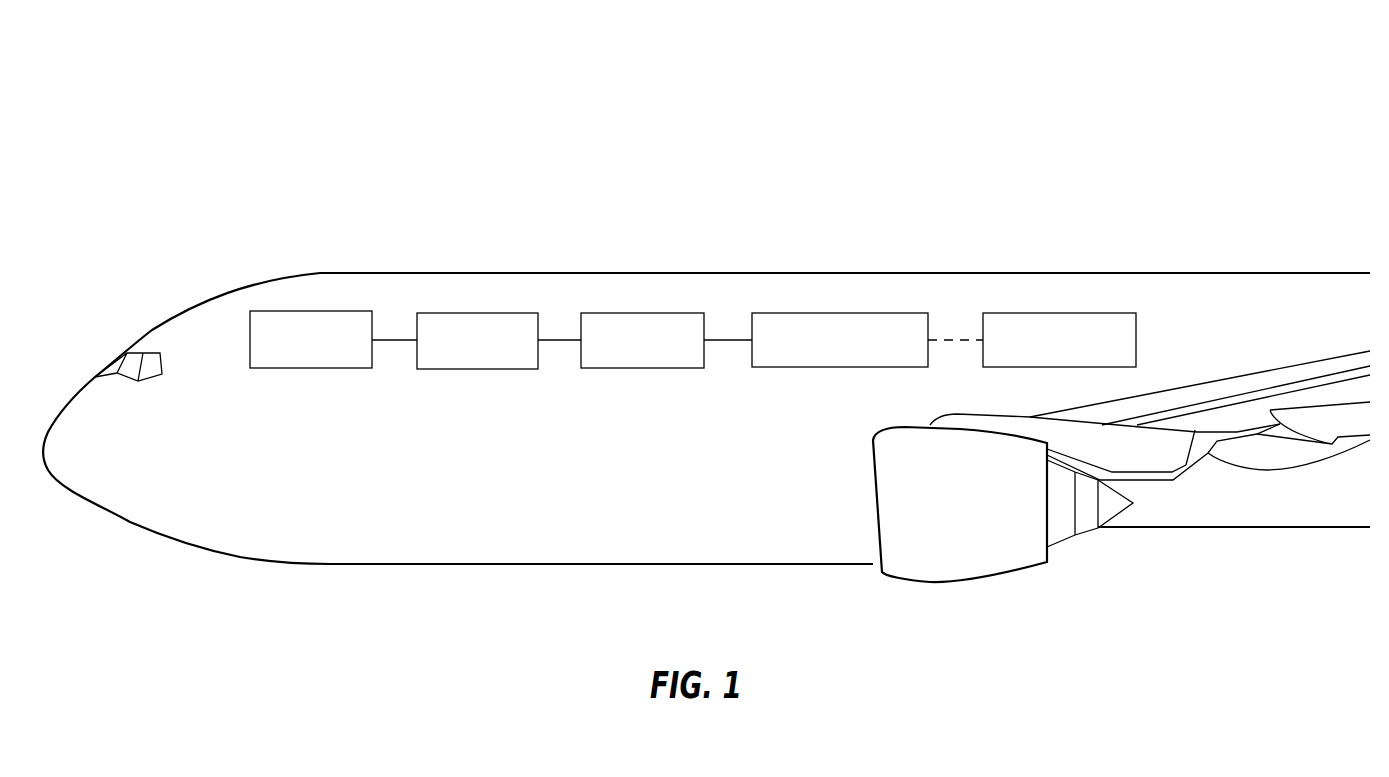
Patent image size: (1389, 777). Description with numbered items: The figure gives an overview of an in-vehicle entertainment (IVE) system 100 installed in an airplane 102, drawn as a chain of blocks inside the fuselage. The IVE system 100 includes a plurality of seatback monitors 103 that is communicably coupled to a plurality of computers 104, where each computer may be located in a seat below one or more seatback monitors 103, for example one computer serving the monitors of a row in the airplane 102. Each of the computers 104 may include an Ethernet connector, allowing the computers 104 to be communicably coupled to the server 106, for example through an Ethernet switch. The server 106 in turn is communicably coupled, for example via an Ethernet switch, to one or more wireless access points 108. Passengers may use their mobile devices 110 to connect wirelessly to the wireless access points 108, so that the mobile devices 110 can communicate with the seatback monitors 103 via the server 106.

The IVE system 100 is at (1178, 123).
The airplane 102 is at (190, 305).
The seatback monitors 103 is at (250, 352).
The computers 104 is at (417, 352).
The server 106 is at (581, 353).
The wireless access points 108 is at (752, 353).
The mobile devices 110 is at (983, 353).